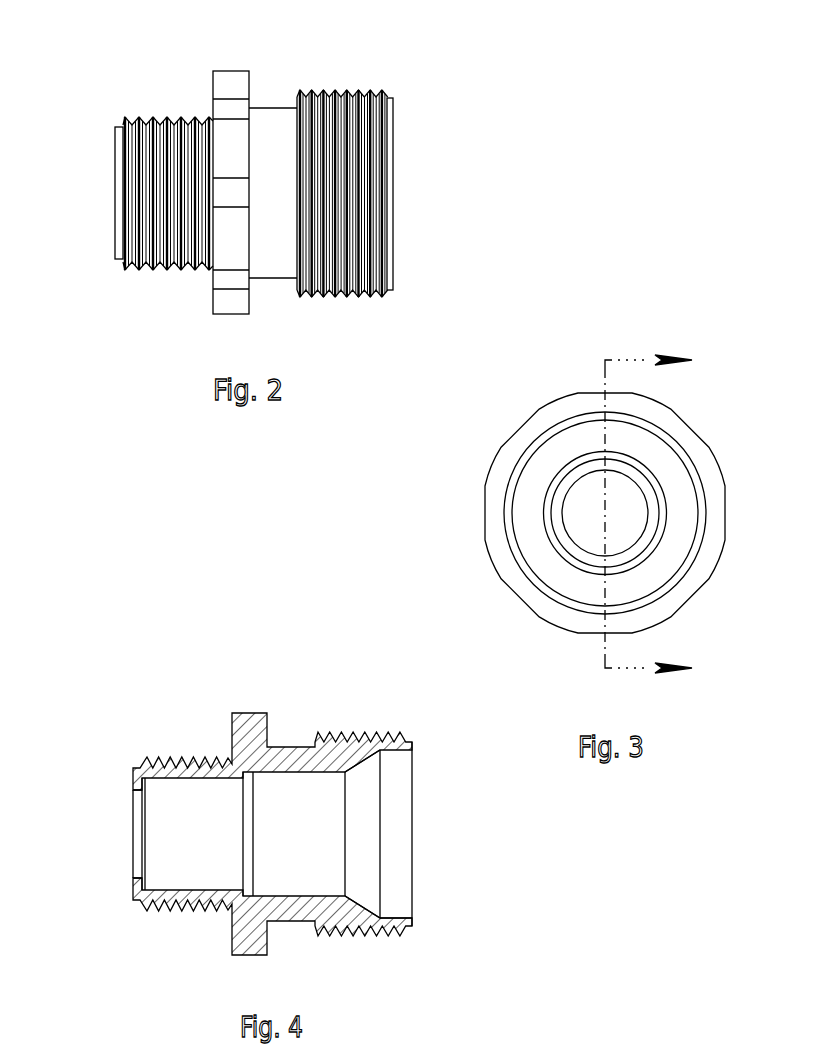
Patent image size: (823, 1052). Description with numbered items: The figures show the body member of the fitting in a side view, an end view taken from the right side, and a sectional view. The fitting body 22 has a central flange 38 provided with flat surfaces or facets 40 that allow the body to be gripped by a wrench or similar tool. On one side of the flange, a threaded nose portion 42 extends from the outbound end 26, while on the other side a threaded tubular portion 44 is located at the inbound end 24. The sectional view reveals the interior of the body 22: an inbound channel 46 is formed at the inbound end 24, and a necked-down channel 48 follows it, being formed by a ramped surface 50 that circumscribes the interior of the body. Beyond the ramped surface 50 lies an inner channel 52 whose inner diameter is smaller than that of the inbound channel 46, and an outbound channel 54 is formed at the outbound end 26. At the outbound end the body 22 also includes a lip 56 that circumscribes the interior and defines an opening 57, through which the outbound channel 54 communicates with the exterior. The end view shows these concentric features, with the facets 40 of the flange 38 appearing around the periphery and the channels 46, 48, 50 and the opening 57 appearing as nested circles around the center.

In FIG. 2, the fitting body 22 is at (83, 97).
In FIG. 3, the fitting body 22 is at (448, 433).
In FIG. 4, the fitting body 22 is at (86, 732).
In FIG. 2, the inbound end 24 is at (393, 192).
In FIG. 2, the outbound end 26 is at (115, 192).
In FIG. 2, the central flange 38 is at (231, 71).
In FIG. 4, the central flange 38 is at (250, 713).
In FIG. 2, the flat surfaces or facets 40 is at (229, 247).
In FIG. 3, the flat surfaces or facets 40 is at (557, 614).
In FIG. 2, the threaded nose portion 42 is at (150, 270).
In FIG. 2, the threaded tubular portion 44 is at (336, 297).
In FIG. 3, the inbound channel 46 is at (700, 477).
In FIG. 4, the inbound channel 46 is at (401, 783).
In FIG. 3, the necked-down channel 48 is at (656, 537).
In FIG. 4, the necked-down channel 48 is at (365, 835).
In FIG. 3, the ramped surface 50 is at (538, 525).
In FIG. 4, the ramped surface 50 is at (365, 910).
In FIG. 4, the inner channel 52 is at (305, 845).
In FIG. 4, the outbound channel 54 is at (203, 845).
In FIG. 3, the lip 56 is at (638, 482).
In FIG. 4, the lip 56 is at (137, 791).
In FIG. 4, the opening 57 is at (137, 858).